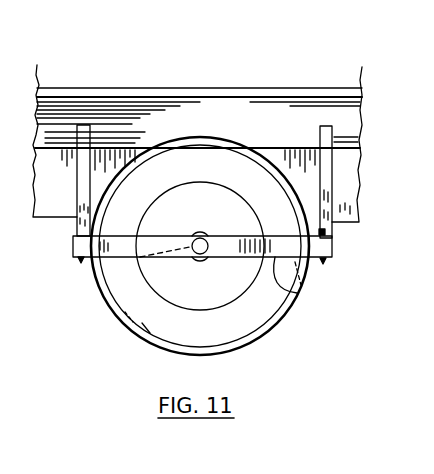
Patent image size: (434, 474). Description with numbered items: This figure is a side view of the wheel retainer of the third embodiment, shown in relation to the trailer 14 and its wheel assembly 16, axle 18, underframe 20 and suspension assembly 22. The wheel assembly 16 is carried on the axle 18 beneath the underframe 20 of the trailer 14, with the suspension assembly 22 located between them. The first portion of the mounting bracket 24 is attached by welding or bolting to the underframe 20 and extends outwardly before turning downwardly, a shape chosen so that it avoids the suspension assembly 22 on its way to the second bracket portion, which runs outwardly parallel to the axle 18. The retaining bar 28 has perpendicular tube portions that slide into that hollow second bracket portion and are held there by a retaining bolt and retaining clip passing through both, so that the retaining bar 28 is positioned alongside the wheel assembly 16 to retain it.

The trailer 14 is at (230, 84).
The wheel assembly 16 is at (140, 335).
The axle 18 is at (140, 258).
The underframe 20 is at (350, 110).
The suspension assembly 22 is at (48, 208).
The first portion of the mounting bracket 24 is at (333, 232).
The retaining bar 28 is at (297, 293).